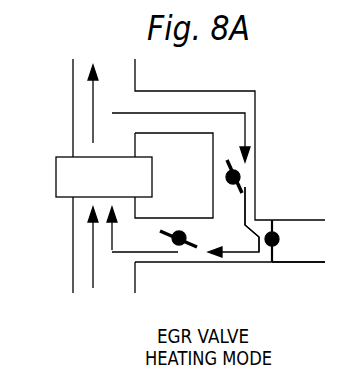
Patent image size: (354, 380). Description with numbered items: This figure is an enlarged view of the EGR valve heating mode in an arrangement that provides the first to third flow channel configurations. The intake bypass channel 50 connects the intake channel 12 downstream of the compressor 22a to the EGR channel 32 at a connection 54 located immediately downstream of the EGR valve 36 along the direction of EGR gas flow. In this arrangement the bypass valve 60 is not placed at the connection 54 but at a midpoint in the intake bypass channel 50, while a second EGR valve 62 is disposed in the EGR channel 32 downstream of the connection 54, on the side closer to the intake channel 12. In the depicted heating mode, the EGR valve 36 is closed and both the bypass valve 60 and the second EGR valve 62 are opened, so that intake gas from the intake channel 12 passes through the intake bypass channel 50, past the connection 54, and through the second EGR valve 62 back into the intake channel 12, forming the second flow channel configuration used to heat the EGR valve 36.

The intake channel 12 is at (82, 270).
The compressor 22a is at (83, 157).
The intake bypass channel 50 is at (247, 100).
The bypass valve 60 is at (241, 173).
The connection 54 is at (232, 217).
The second EGR valve 62 is at (183, 246).
The EGR valve 36 is at (276, 262).
The EGR channel 32 is at (313, 248).